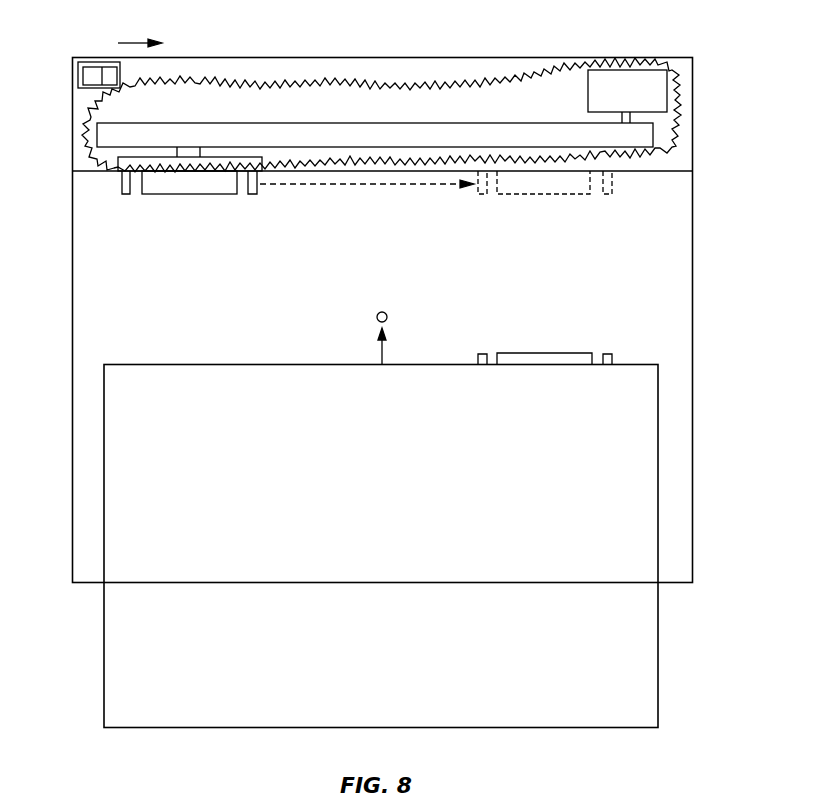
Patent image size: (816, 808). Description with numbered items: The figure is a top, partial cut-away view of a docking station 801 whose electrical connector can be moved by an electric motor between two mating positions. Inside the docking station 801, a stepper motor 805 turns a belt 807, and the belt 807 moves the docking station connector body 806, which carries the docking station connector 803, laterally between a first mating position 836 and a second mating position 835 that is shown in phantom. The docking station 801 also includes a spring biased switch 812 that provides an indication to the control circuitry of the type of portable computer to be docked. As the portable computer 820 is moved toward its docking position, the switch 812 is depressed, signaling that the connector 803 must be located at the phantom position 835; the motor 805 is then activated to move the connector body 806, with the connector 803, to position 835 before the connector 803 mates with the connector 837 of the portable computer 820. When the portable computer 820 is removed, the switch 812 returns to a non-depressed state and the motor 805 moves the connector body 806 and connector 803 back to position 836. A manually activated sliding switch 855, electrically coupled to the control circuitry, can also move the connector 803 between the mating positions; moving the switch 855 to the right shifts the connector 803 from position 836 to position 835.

The docking station 801 is at (700, 93).
The manually activated sliding switch 855 is at (107, 57).
The stepper motor 805 is at (627, 96).
The belt 807 is at (655, 133).
The docking station connector body 806 is at (217, 170).
The docking station connector 803 is at (168, 195).
The mating position 836 is at (215, 208).
The mating position shown in phantom 835 is at (533, 200).
The switch 812 is at (387, 311).
The connector 837 is at (560, 353).
The portable computer 820 is at (558, 700).